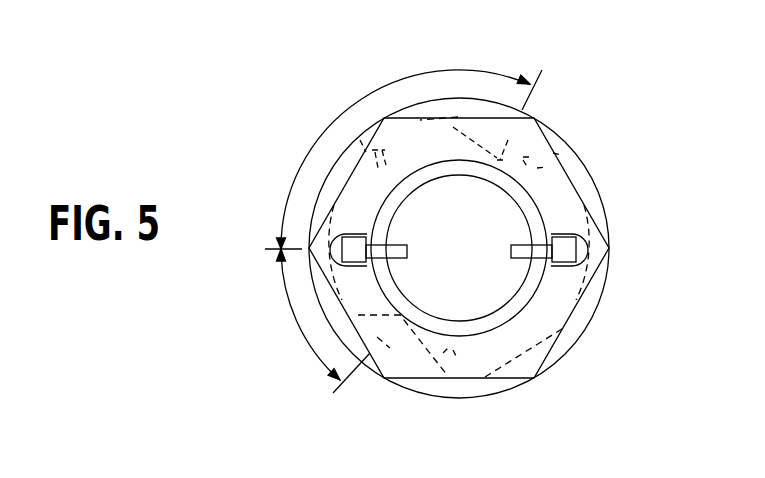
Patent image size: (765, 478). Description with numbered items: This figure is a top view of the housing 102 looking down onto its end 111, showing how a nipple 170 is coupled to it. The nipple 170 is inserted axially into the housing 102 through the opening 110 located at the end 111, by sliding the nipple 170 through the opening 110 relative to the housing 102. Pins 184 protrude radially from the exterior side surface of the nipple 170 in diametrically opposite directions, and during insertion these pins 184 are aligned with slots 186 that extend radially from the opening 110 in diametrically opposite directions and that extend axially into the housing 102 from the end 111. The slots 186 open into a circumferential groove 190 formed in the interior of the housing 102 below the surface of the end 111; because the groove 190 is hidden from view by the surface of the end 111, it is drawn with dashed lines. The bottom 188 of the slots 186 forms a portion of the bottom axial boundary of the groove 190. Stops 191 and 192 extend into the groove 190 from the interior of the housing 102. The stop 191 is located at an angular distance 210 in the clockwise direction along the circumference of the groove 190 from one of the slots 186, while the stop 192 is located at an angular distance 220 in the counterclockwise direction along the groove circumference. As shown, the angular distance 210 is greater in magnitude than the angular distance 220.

The housing 102 is at (592, 177).
The opening 110 is at (416, 170).
The end 111 is at (530, 146).
The nipple 170 is at (415, 324).
The pins 184 is at (352, 247).
The slots 186 is at (330, 257).
The bottom 188 is at (458, 117).
The circumferential groove 190 is at (363, 145).
The stop 191 is at (538, 153).
The stop 192 is at (440, 365).
The angular distance 210 is at (460, 70).
The angular distance 220 is at (297, 323).